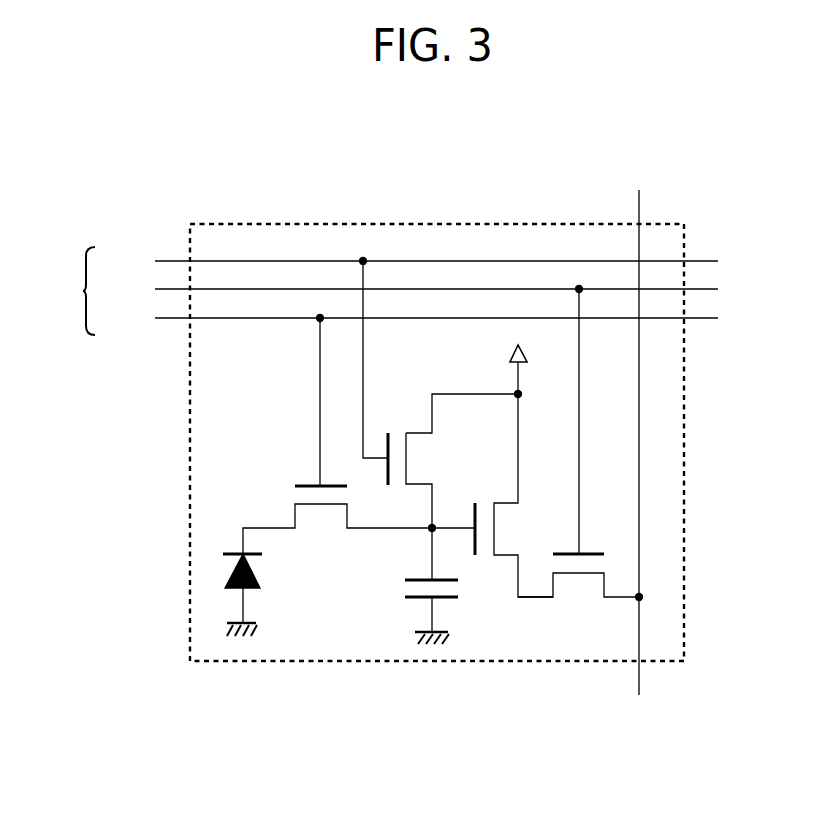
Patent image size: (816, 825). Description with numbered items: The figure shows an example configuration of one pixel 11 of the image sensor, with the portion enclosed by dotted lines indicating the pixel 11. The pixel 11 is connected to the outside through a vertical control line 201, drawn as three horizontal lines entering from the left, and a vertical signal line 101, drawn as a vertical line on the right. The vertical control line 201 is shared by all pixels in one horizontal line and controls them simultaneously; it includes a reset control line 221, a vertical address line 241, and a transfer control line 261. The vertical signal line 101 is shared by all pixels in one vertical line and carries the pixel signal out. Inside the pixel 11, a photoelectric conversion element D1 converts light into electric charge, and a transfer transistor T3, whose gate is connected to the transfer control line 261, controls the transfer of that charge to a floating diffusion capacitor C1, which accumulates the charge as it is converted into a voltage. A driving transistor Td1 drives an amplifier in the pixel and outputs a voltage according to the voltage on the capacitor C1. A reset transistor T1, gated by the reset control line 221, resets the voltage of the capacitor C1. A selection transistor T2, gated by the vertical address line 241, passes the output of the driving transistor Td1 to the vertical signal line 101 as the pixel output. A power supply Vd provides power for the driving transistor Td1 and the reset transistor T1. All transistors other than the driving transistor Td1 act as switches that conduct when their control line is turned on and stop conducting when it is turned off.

The pixel 11 is at (190, 421).
The vertical signal line 101 is at (640, 463).
The vertical control line 201 is at (64, 291).
The reset control line 221 is at (411, 261).
The vertical address line 241 is at (411, 290).
The transfer control line 261 is at (411, 320).
The reset transistor T1 is at (440, 394).
The selection transistor T2 is at (578, 458).
The transfer transistor T3 is at (359, 436).
The driving transistor Td1 is at (502, 495).
The floating diffusion capacitor C1 is at (415, 586).
The photoelectric conversion element D1 is at (259, 595).
The power supply Vd is at (500, 366).